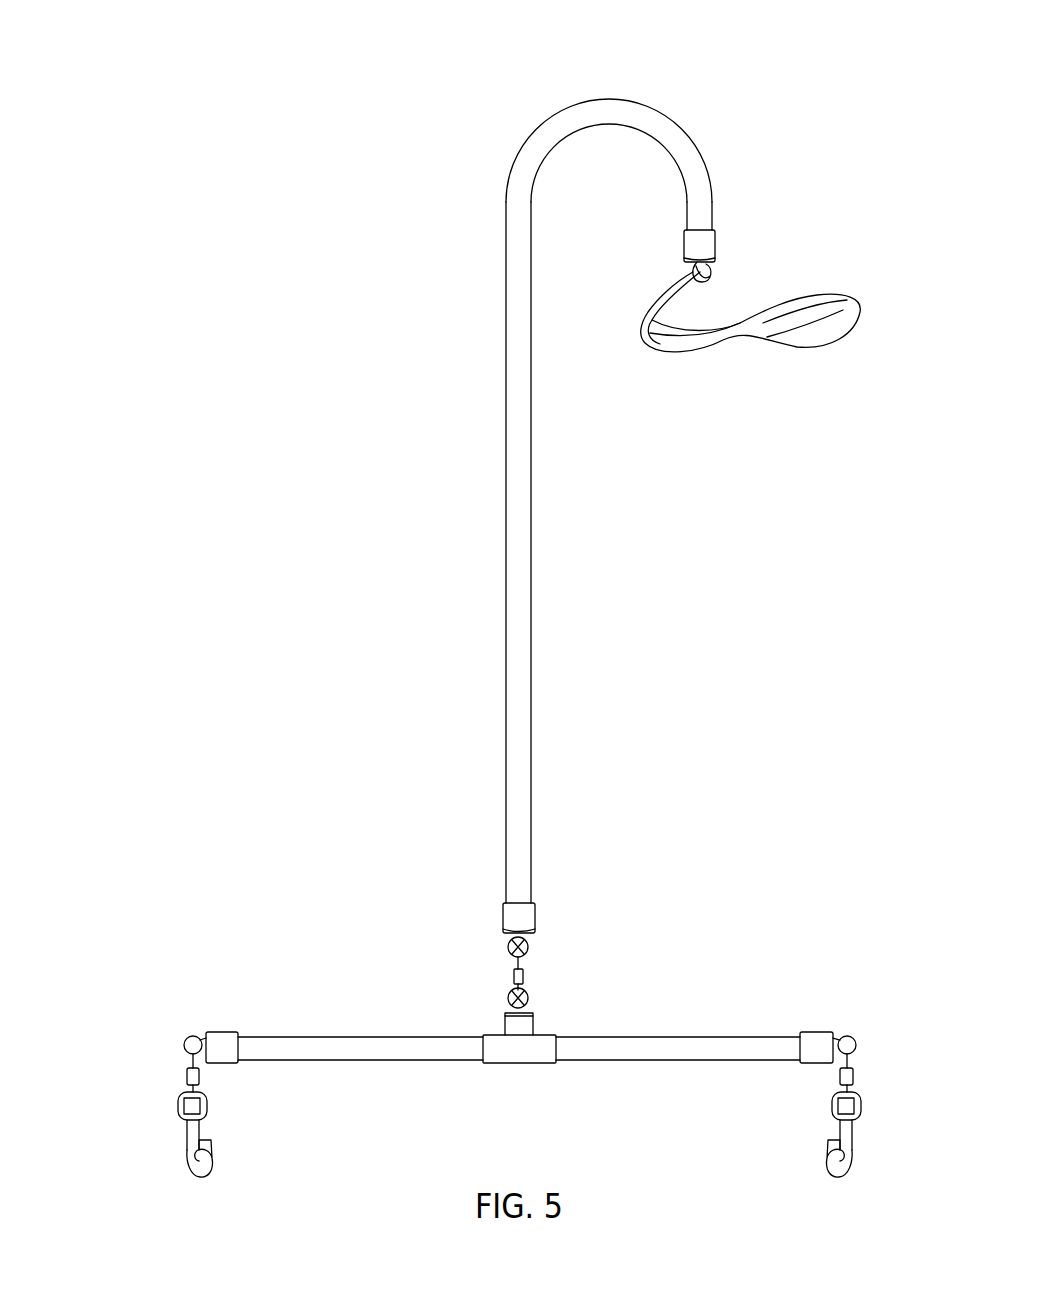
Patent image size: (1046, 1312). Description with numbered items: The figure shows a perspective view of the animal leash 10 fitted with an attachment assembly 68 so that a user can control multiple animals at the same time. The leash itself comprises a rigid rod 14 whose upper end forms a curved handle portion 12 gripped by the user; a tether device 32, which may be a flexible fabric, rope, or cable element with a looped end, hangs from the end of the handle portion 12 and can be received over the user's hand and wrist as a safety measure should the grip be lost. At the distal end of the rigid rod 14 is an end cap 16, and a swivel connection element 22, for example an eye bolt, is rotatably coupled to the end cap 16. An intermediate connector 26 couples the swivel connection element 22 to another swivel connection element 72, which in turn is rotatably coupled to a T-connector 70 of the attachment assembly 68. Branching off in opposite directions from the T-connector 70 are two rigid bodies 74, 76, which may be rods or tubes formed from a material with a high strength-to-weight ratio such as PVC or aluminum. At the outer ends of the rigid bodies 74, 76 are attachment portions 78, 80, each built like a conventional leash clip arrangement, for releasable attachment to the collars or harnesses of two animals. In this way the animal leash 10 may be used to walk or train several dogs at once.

The animal leash 10 is at (345, 414).
The handle portion 12 is at (606, 84).
The rigid rod 14 is at (513, 530).
The end cap 16 is at (520, 914).
The swivel connection element 22 is at (508, 944).
The intermediate connector 26 is at (523, 977).
The tether device 32 is at (782, 284).
The attachment assembly 68 is at (308, 985).
The T-connector 70 is at (514, 1062).
The swivel connection element 72 is at (508, 997).
The rigid body 74 is at (377, 1042).
The rigid body 76 is at (684, 1043).
The attachment portion 78 is at (156, 1105).
The attachment portion 80 is at (873, 1102).